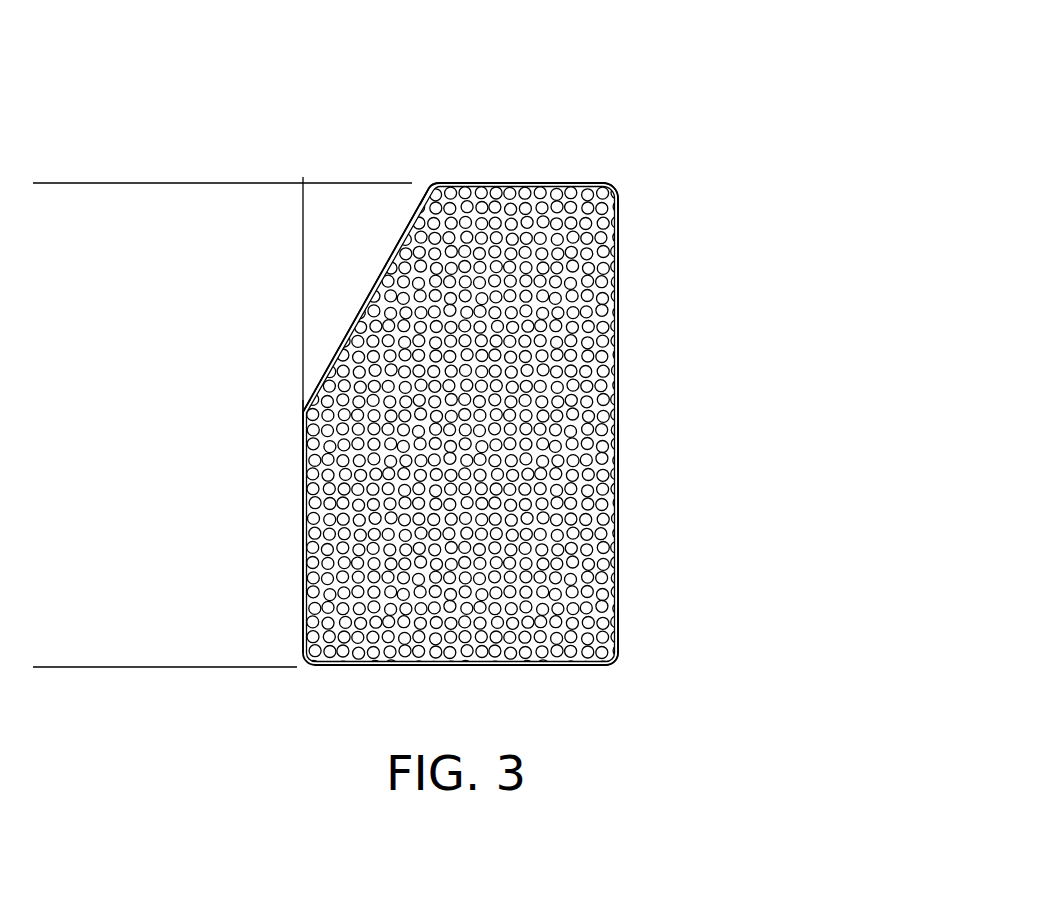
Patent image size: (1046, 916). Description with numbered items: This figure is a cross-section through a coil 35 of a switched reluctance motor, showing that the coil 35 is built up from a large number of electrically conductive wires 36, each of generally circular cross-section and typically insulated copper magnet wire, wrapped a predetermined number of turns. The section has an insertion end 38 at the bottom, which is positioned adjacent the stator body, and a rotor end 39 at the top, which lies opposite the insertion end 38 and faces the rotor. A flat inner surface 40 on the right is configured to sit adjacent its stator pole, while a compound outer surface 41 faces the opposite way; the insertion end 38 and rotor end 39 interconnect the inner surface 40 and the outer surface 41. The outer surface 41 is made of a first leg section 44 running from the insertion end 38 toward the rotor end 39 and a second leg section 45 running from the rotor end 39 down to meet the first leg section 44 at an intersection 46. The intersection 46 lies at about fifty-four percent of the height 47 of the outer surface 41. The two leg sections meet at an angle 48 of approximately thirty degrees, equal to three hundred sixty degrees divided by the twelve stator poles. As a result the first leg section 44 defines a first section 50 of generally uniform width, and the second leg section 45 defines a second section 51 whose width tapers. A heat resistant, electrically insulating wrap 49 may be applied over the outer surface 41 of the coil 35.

The coil 35 is at (631, 110).
The electrically conductive wires 36 is at (618, 445).
The insertion end 38 is at (475, 667).
The rotor end 39 is at (493, 183).
The inner surface 40 is at (618, 350).
The compound outer surface 41 is at (345, 333).
The first leg section 44 is at (305, 555).
The second leg section 45 is at (395, 238).
The intersection 46 is at (303, 412).
The height 47 is at (106, 185).
The angle 48 is at (372, 277).
The insulating wrap 49 is at (618, 205).
The first section 50 is at (642, 628).
The second section 51 is at (650, 278).